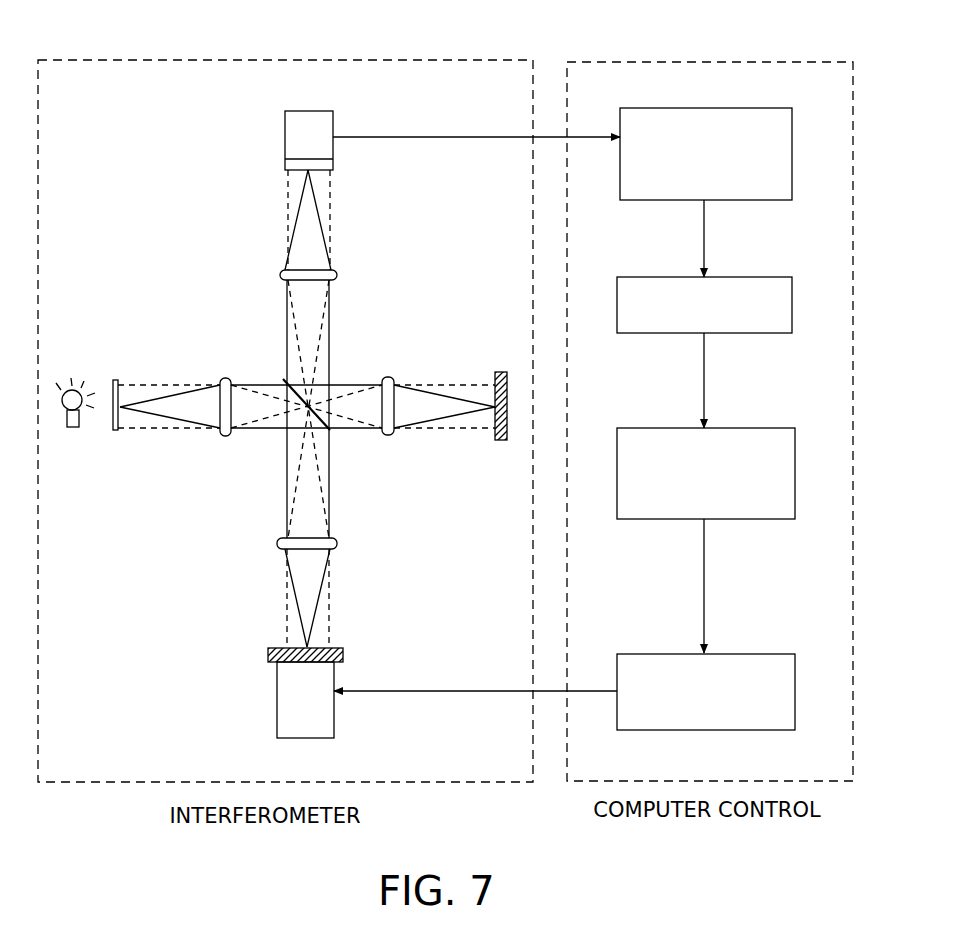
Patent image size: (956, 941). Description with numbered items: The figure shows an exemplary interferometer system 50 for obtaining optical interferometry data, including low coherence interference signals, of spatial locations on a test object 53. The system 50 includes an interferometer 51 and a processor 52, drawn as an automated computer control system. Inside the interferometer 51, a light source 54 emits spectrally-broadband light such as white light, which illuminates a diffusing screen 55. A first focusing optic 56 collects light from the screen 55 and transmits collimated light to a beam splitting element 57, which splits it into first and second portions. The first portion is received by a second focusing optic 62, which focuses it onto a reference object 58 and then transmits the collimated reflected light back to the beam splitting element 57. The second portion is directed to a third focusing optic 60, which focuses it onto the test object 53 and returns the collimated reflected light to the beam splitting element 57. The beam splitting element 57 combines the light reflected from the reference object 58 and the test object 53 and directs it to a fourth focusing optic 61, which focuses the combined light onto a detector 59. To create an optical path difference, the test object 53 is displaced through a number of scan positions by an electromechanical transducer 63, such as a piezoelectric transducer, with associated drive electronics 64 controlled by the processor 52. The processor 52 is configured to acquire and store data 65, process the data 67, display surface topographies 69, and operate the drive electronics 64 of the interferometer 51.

The interferometer system 50 is at (457, 39).
The interferometer 51 is at (123, 60).
The processor 52 is at (632, 62).
The test object 53 is at (344, 648).
The light source 54 is at (66, 382).
The diffusing screen 55 is at (113, 380).
The first focusing optic 56 is at (224, 378).
The beam splitting element 57 is at (330, 430).
The reference object 58 is at (503, 441).
The detector 59 is at (285, 147).
The third focusing optic 60 is at (337, 545).
The fourth focusing optic 61 is at (280, 277).
The second focusing optic 62 is at (388, 376).
The electromechanical transducer 63 is at (277, 682).
The drive electronics 64 is at (750, 654).
The data acquisition and storage 65 is at (755, 108).
The data processing 67 is at (757, 277).
The surface topography display 69 is at (756, 428).